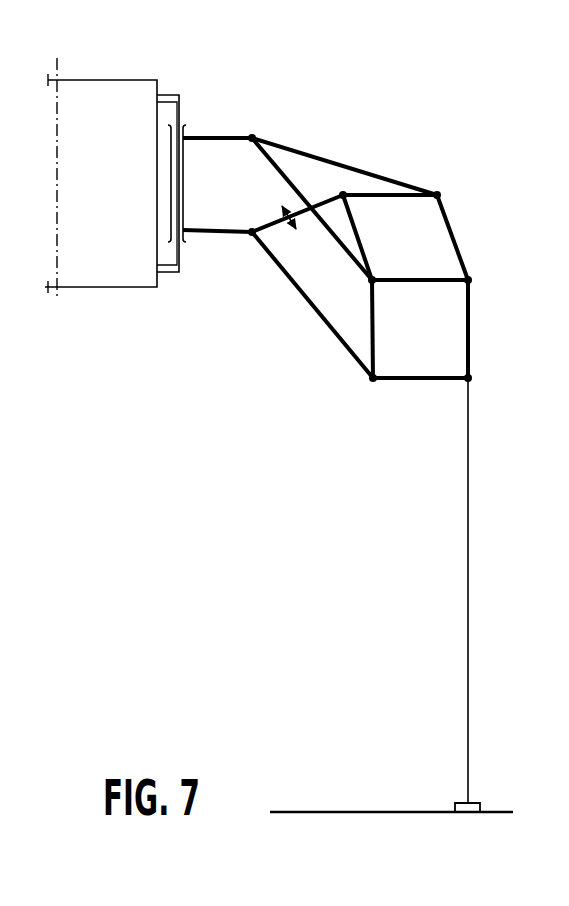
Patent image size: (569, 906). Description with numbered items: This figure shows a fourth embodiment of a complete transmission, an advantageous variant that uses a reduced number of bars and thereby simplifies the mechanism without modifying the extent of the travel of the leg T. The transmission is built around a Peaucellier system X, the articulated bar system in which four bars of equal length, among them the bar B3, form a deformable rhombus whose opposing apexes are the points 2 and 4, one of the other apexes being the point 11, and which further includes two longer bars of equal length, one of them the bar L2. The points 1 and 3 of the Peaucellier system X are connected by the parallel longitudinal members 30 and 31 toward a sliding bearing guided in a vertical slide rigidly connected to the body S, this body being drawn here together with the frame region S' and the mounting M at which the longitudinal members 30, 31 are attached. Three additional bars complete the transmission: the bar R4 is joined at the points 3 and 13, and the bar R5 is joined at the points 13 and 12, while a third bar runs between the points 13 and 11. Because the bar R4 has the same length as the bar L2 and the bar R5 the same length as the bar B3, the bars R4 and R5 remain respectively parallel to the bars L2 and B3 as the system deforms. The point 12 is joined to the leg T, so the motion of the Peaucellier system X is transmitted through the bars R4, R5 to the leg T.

The body S' is at (101, 168).
The body S is at (196, 157).
The mounting plate M is at (196, 194).
The longitudinal member 30 is at (215, 135).
The longitudinal member 31 is at (203, 234).
The point 1 is at (256, 137).
The point 3 is at (246, 240).
The point 4 is at (345, 200).
The Peaucellier system X is at (436, 166).
The bar L2 is at (337, 240).
The apex 11 is at (374, 276).
The bar B3 is at (440, 278).
The point 2 is at (472, 282).
The additional bar R4 is at (333, 332).
The point 13 is at (368, 383).
The additional bar R5 is at (403, 380).
The point 12 is at (473, 373).
The leg T is at (467, 587).